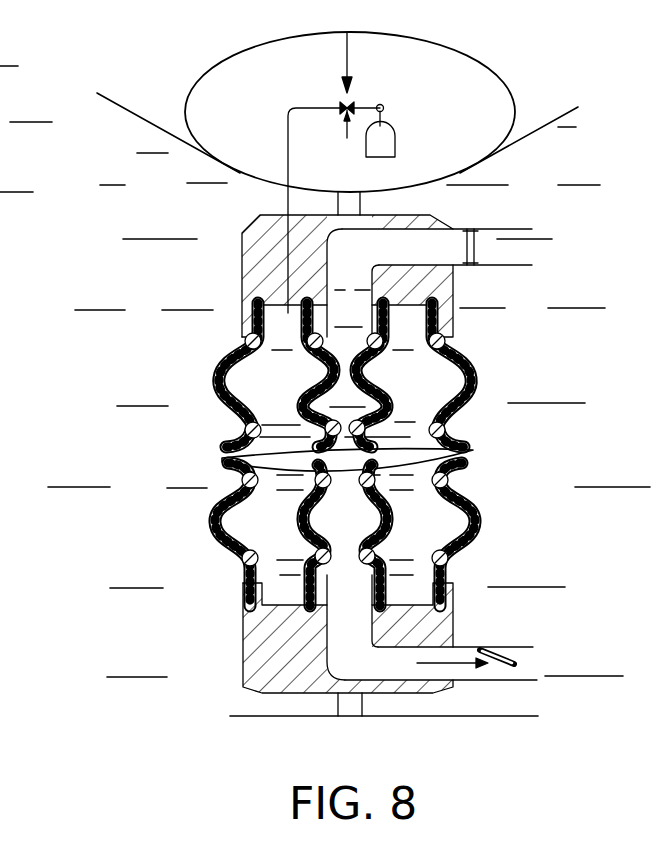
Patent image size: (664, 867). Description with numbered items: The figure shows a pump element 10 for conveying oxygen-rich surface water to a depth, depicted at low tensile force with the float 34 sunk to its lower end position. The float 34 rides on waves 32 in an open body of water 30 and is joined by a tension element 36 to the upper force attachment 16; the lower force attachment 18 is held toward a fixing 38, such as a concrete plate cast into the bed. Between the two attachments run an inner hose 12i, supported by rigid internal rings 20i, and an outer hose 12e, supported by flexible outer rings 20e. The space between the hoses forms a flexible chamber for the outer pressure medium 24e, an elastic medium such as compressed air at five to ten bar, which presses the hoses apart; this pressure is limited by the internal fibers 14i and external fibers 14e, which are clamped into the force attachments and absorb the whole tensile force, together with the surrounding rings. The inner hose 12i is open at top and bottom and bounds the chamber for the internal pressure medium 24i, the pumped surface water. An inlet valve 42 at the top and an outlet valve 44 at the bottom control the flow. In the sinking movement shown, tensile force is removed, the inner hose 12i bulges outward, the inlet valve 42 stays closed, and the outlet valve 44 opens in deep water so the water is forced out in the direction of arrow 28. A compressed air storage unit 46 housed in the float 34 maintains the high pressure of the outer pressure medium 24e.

The pump element 10 is at (572, 427).
The outer hose 12e is at (463, 357).
The inner hose 12i is at (391, 391).
The external fibers 14e is at (217, 378).
The internal fibers 14i is at (312, 376).
The upper force attachment 16 is at (250, 268).
The lower force attachment 18 is at (250, 673).
The flexible outer rings 20e is at (462, 480).
The rigid internal rings 20i is at (385, 517).
The outer pressure medium 24e is at (475, 543).
The internal pressure medium 24i is at (345, 553).
The arrow 28 is at (440, 665).
The open body of water 30 is at (182, 197).
The waves 32 is at (507, 153).
The float 34 is at (503, 97).
The tension element 36 is at (350, 705).
The fixing 38 is at (512, 723).
The inlet valve 42 is at (475, 247).
The outlet valve 44 is at (517, 663).
The compressed air storage unit 46 is at (388, 150).